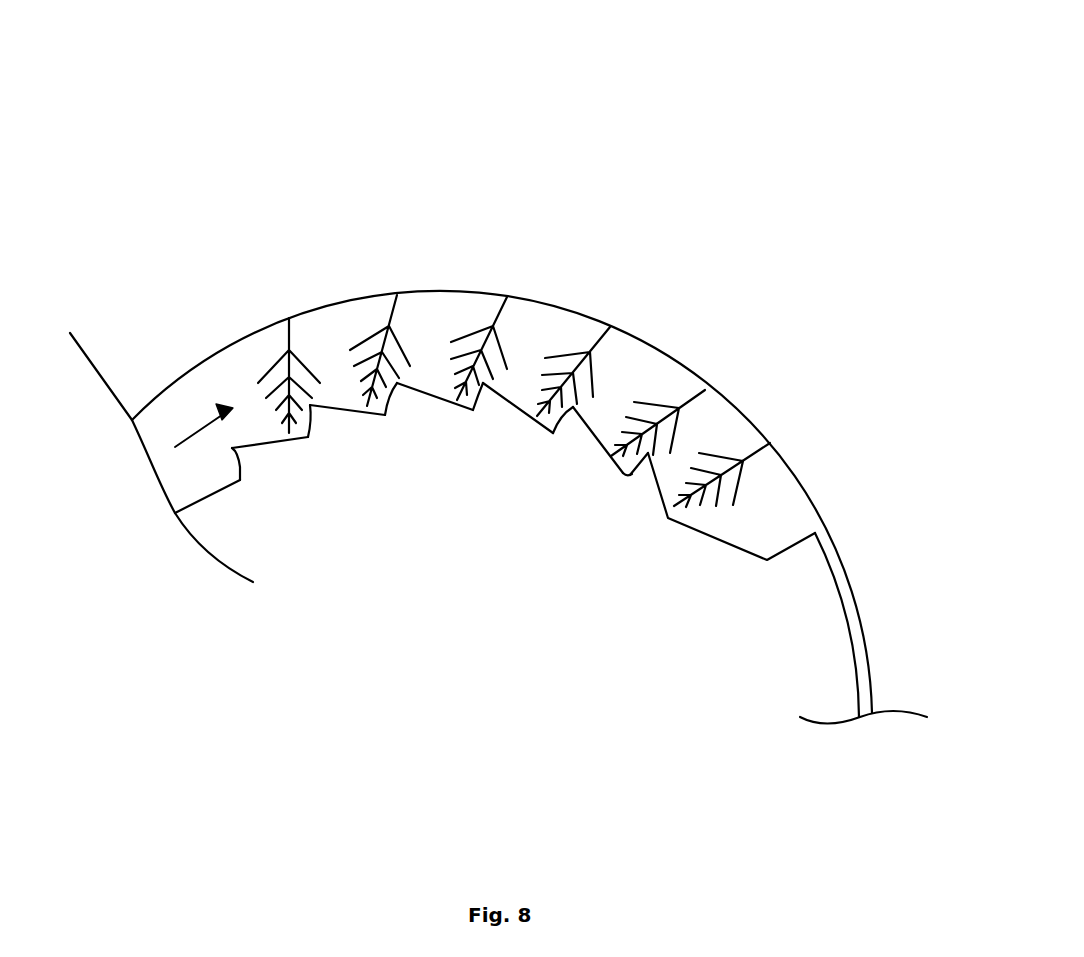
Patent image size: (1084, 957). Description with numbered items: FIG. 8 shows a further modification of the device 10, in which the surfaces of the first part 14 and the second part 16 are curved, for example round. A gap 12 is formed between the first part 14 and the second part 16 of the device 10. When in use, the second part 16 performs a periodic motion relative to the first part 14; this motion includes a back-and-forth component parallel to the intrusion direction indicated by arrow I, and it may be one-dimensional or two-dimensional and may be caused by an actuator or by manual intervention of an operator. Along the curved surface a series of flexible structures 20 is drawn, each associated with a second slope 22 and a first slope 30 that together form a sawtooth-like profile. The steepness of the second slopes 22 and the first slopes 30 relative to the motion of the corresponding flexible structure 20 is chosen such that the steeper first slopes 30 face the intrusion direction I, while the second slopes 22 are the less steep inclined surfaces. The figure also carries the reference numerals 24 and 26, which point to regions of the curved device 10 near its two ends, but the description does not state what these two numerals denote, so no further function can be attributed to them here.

The device 10 is at (698, 104).
The gap 12 is at (793, 523).
The first part 14 is at (582, 628).
The second part 16 is at (640, 250).
The flexible structure 20 is at (289, 318).
The second slope 22 is at (267, 445).
The leading edge 24 is at (208, 311).
The trailing edge 26 is at (800, 370).
The first slope 30 is at (242, 468).